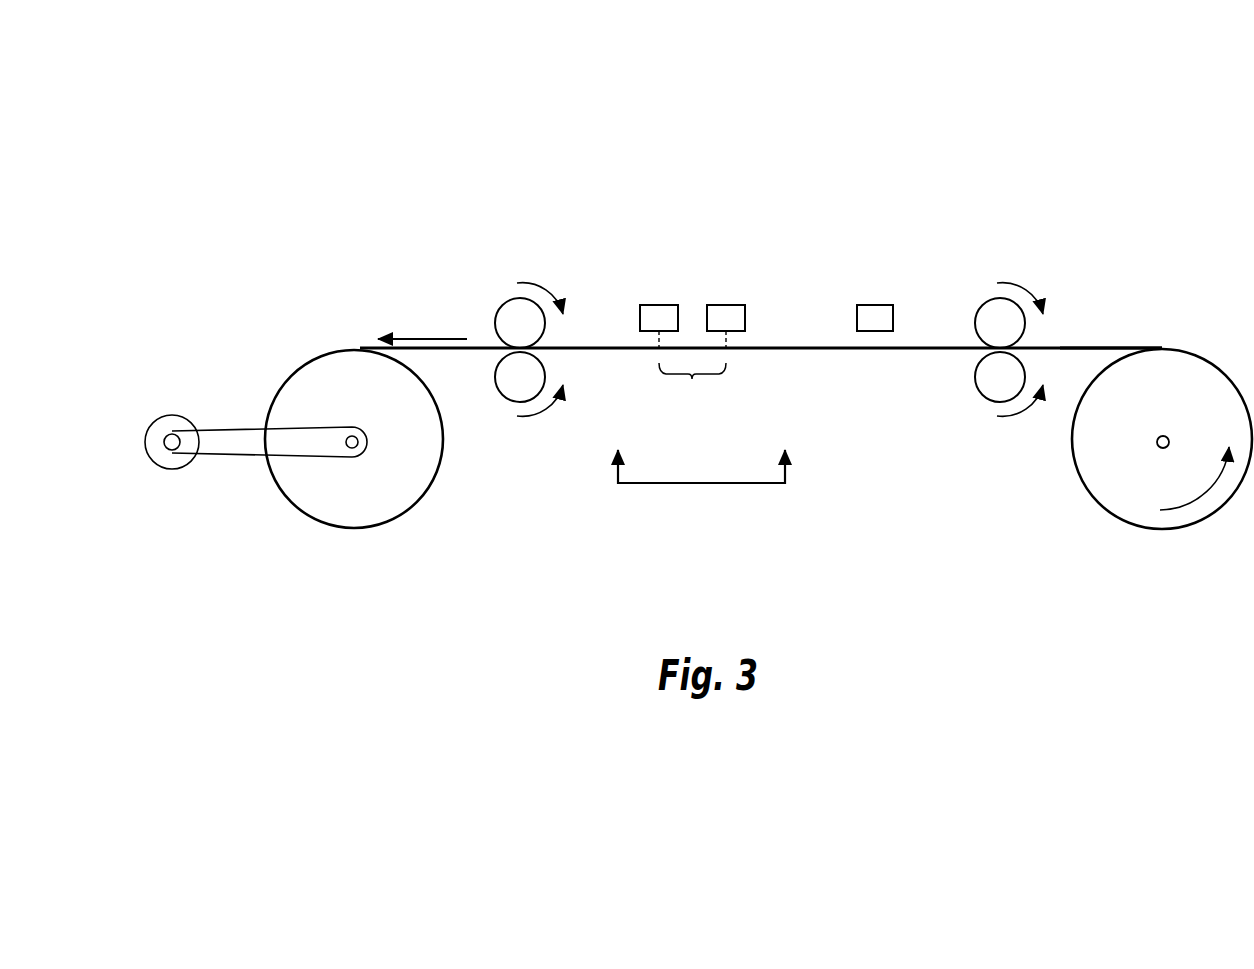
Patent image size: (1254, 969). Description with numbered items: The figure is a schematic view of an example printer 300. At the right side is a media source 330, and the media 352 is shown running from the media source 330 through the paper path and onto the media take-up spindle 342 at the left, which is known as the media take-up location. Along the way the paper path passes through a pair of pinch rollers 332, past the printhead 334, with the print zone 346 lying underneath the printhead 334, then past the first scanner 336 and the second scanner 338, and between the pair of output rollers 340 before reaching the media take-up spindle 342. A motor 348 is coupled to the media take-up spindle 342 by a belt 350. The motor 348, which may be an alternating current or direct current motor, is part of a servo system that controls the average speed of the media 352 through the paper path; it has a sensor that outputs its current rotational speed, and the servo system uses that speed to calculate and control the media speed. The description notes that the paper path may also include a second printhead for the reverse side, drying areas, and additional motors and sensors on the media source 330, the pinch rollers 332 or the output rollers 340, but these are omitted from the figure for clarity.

The printer 300 is at (620, 176).
The media source 330 is at (1149, 404).
The pair of pinch rollers 332 is at (983, 300).
The printhead 334 is at (873, 305).
The first scanner 336 is at (727, 305).
The second scanner 338 is at (662, 305).
The pair of output rollers 340 is at (502, 305).
The media take-up spindle 342 is at (335, 398).
The print zone 346 is at (903, 337).
The motor 348 is at (441, 336).
The belt 350 is at (235, 456).
The media 352 is at (1085, 347).